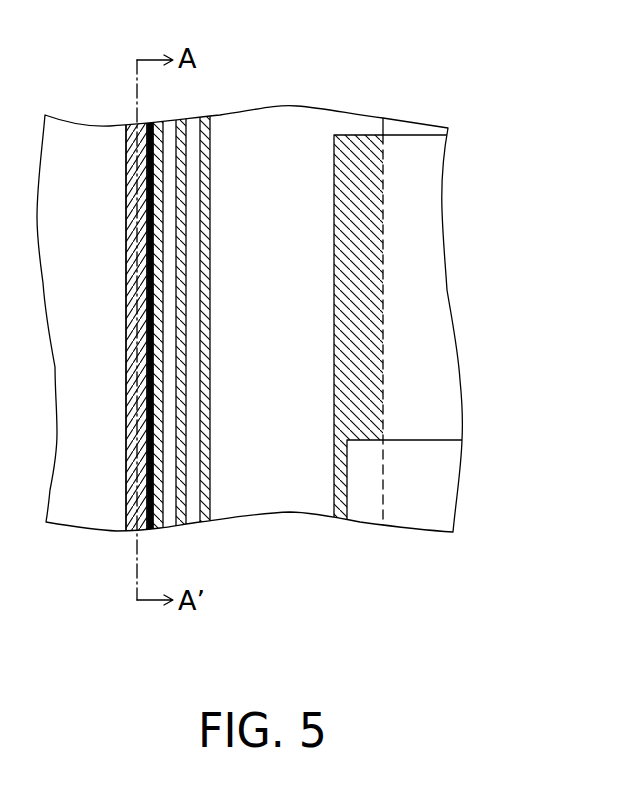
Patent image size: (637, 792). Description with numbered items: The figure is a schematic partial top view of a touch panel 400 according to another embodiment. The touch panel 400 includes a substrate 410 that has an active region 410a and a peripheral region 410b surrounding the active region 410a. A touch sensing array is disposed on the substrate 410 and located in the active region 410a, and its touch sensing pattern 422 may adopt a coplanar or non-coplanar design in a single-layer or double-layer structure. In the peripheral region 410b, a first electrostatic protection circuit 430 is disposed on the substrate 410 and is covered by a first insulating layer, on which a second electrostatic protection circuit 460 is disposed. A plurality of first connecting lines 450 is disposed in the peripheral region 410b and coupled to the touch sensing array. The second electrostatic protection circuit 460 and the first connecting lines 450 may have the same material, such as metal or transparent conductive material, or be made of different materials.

The touch panel 400 is at (503, 625).
The substrate 410 is at (367, 37).
The active region 410a is at (408, 128).
The peripheral region 410b is at (191, 110).
The touch sensing pattern 422 is at (427, 290).
The first electrostatic protection circuit 430 is at (134, 530).
The first connecting lines 450 is at (157, 522).
The second electrostatic protection circuit 460 is at (127, 510).